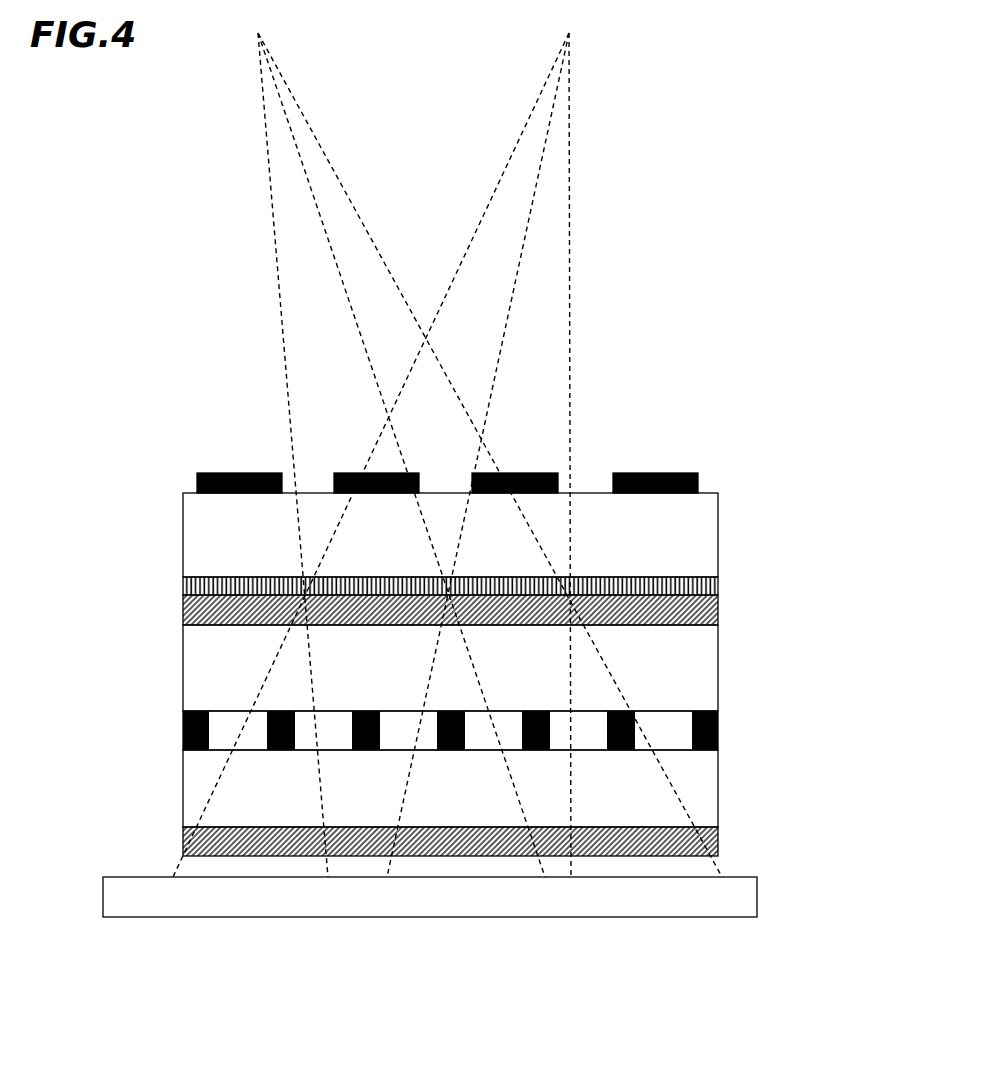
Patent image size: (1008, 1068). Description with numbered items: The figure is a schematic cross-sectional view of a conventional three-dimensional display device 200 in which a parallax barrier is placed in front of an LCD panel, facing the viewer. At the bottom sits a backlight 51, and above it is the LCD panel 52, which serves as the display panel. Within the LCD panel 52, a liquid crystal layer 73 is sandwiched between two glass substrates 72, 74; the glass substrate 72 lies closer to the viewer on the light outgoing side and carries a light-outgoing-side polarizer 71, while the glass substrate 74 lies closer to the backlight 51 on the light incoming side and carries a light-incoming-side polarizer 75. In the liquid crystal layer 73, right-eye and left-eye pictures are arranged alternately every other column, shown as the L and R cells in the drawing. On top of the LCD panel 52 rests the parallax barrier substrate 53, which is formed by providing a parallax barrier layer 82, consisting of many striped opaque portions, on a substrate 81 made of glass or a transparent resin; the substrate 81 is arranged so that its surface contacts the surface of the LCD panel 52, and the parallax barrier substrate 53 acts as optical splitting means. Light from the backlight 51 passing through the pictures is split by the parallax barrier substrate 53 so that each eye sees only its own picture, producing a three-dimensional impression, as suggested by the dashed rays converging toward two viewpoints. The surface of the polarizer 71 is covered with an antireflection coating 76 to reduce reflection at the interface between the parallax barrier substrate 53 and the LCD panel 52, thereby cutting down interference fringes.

The three-dimensional display device 200 is at (727, 378).
The backlight 51 is at (747, 893).
The LCD panel 52 is at (735, 613).
The parallax barrier substrate 53 is at (735, 495).
The light-outgoing-side polarizer 71 is at (185, 612).
The glass substrate 72 is at (185, 675).
The liquid crystal layer 73 is at (185, 731).
The glass substrate 74 is at (197, 793).
The light-incoming-side polarizer 75 is at (185, 833).
The antireflection coating 76 is at (187, 585).
The substrate 81 is at (186, 552).
The parallax barrier layer 82 is at (222, 473).